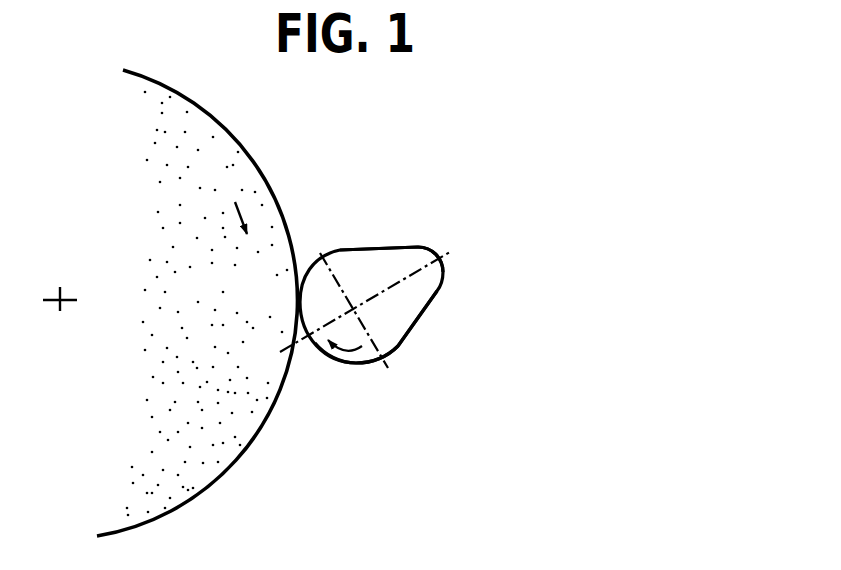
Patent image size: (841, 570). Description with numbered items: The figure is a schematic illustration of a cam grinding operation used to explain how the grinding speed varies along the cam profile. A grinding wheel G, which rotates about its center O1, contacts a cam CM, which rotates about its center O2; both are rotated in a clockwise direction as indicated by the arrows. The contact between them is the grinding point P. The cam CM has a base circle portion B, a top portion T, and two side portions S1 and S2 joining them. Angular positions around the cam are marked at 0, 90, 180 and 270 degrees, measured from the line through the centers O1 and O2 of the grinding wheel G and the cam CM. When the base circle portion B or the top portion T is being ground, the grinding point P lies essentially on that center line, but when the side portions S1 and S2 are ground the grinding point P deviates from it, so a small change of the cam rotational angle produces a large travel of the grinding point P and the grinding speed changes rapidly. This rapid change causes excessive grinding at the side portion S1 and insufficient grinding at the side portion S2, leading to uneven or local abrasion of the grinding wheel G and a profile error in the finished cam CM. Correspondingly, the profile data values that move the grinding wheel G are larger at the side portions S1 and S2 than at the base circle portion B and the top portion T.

The grinding wheel G is at (250, 176).
The center of the grinding wheel O1 is at (59, 284).
The cam CM is at (403, 251).
The center of the cam O2 is at (358, 313).
The grinding point P is at (297, 302).
The side portion S1 is at (425, 318).
The side portion S2 is at (372, 243).
The top portion T is at (446, 265).
The base circle portion B is at (332, 362).
The 0 degree angular position 0 is at (268, 360).
The 90 degree angular position 90 is at (393, 383).
The 180 degree angular position 180 is at (478, 249).
The 270 degree angular position 270 is at (323, 235).